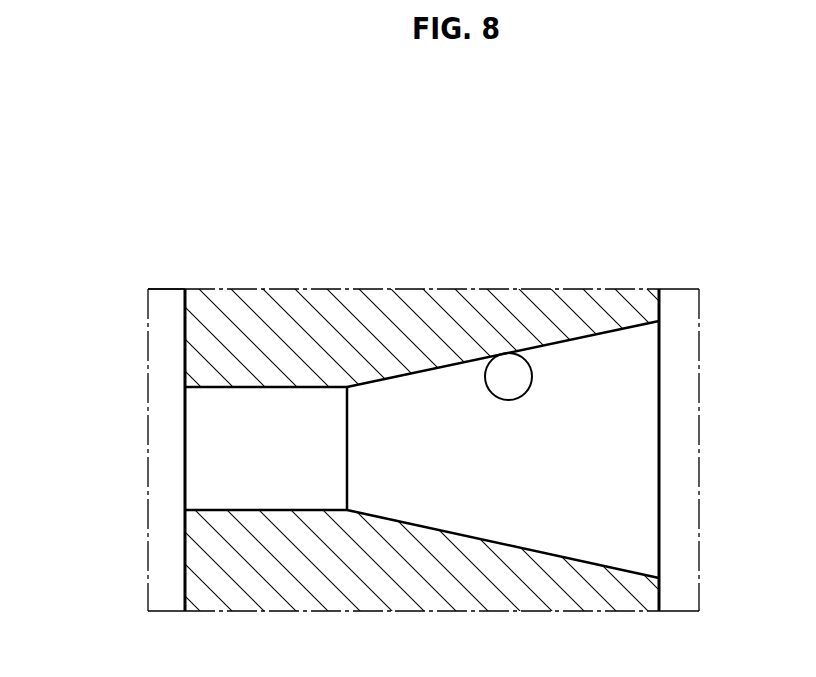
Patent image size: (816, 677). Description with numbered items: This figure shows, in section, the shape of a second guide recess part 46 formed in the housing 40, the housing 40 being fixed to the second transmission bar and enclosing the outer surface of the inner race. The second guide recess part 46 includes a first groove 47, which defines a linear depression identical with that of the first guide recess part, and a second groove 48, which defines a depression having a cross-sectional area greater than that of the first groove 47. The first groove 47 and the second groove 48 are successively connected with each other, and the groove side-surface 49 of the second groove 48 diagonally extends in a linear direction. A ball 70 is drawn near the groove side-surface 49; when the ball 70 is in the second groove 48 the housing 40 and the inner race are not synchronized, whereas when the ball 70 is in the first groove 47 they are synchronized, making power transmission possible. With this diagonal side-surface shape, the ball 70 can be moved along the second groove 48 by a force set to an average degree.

The housing 40 is at (441, 261).
The second guide recess part 46 is at (410, 449).
The first groove 47 is at (212, 427).
The second groove 48 is at (434, 449).
The groove side-surface 49 is at (582, 338).
The ball 70 is at (515, 383).